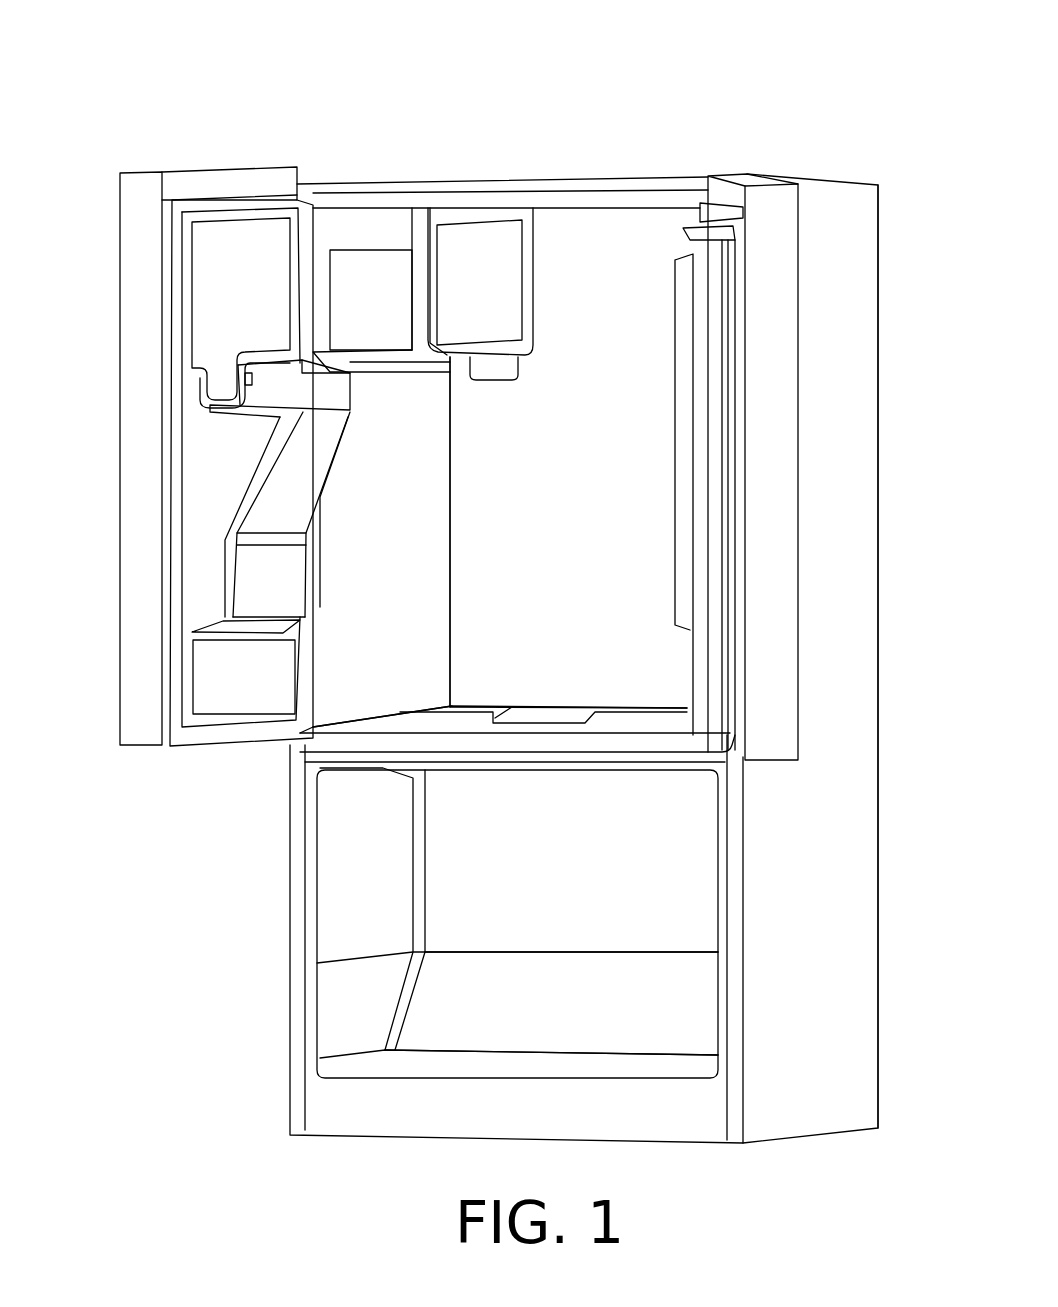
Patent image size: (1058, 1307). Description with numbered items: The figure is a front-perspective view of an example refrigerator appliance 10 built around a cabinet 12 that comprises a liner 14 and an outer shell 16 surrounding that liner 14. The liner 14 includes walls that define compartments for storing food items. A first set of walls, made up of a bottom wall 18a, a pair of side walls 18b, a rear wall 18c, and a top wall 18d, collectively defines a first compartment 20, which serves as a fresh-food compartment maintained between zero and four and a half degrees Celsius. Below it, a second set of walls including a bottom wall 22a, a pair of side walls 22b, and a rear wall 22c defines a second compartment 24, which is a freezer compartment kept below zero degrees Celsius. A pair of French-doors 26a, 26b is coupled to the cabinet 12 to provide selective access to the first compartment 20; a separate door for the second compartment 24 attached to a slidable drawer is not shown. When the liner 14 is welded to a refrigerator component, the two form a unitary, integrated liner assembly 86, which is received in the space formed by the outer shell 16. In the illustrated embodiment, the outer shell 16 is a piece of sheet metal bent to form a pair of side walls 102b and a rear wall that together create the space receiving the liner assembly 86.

The refrigerator appliance 10 is at (712, 75).
The cabinet 12 is at (865, 957).
The liner 14 is at (340, 838).
The outer shell 16 is at (865, 675).
The bottom wall 18a is at (551, 700).
The side walls 18b is at (407, 633).
The rear wall 18c is at (592, 497).
The top wall 18d is at (572, 222).
The first compartment 20 is at (660, 284).
The bottom wall 22a is at (563, 1043).
The side walls 22b is at (392, 930).
The rear wall 22c is at (595, 860).
The second compartment 24 is at (700, 822).
The French-door 26a is at (125, 378).
The French-door 26b is at (800, 305).
The liner assembly 86 is at (437, 441).
The side walls 102b is at (848, 458).